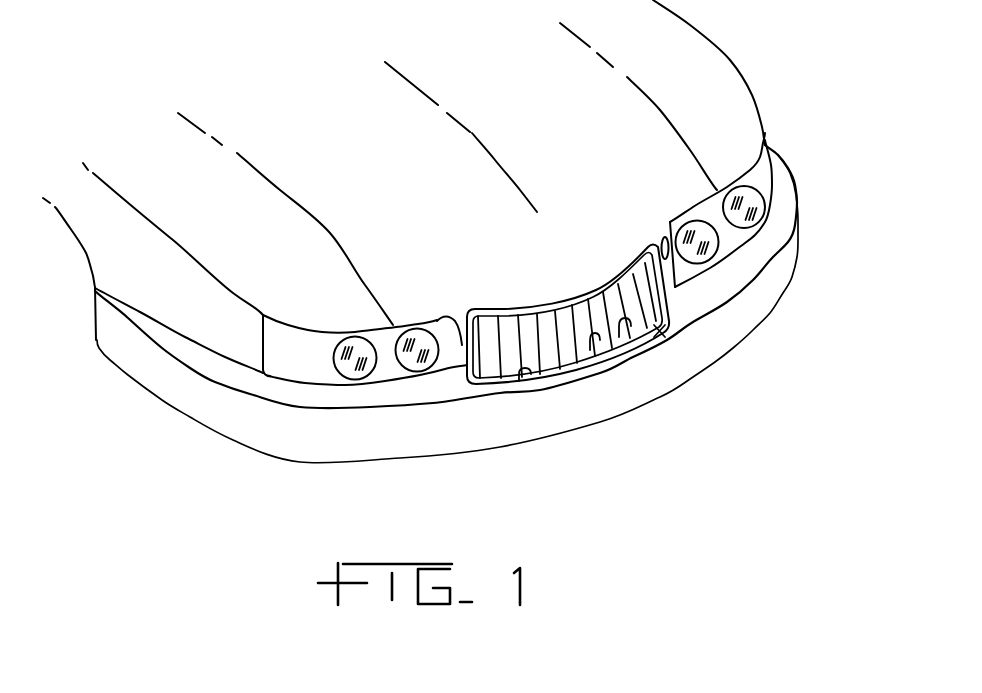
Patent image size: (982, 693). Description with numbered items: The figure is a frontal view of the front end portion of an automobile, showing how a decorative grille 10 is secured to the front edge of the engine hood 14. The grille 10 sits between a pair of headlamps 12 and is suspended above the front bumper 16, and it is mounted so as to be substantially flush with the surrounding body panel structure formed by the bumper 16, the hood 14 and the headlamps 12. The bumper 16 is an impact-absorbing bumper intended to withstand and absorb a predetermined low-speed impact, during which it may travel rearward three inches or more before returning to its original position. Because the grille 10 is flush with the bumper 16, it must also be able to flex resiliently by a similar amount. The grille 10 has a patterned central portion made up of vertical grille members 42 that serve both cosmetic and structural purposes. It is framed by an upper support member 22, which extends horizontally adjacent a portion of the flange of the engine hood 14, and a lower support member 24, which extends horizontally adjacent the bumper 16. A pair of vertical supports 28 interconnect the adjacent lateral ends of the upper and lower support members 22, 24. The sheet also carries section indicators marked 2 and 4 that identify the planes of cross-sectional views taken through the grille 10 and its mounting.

The decorative grille 10 is at (663, 336).
The headlamps 12 is at (350, 372).
The engine hood 14 is at (693, 175).
The front bumper 16 is at (390, 440).
The upper support member 22 is at (620, 270).
The lower support member 24 is at (522, 372).
The vertical supports 28 is at (437, 320).
The vertical grille members 42 is at (622, 334).
The section line 2- 2 is at (578, 287).
The section line 4- 4 is at (457, 312).